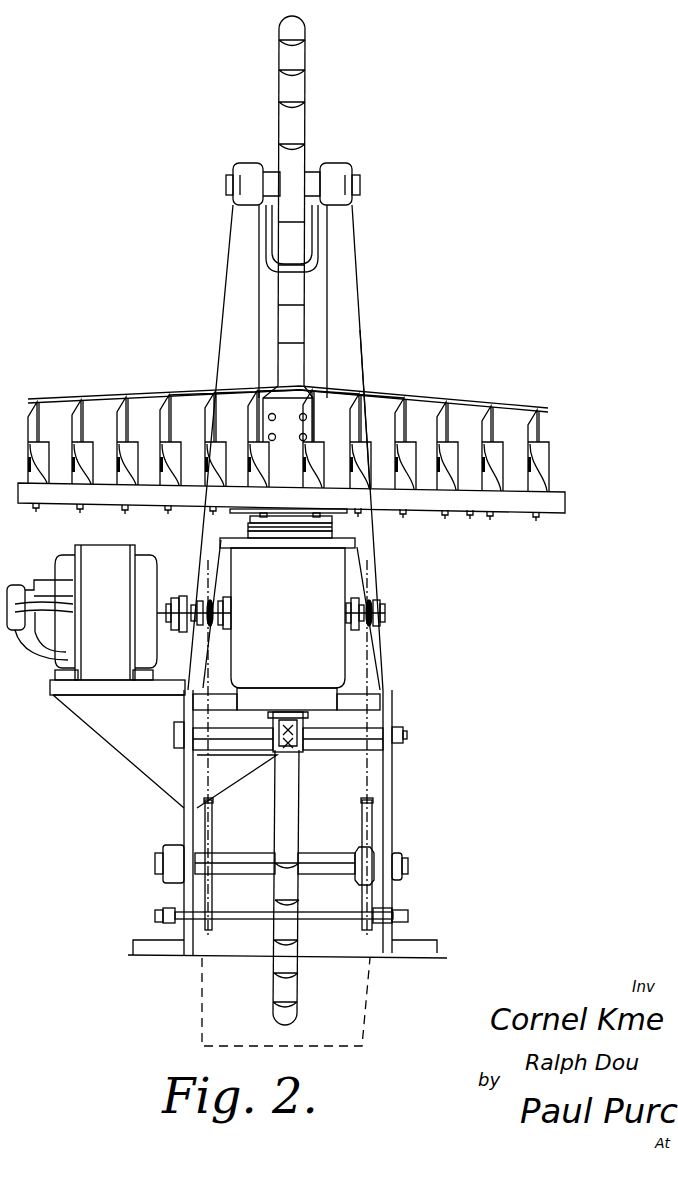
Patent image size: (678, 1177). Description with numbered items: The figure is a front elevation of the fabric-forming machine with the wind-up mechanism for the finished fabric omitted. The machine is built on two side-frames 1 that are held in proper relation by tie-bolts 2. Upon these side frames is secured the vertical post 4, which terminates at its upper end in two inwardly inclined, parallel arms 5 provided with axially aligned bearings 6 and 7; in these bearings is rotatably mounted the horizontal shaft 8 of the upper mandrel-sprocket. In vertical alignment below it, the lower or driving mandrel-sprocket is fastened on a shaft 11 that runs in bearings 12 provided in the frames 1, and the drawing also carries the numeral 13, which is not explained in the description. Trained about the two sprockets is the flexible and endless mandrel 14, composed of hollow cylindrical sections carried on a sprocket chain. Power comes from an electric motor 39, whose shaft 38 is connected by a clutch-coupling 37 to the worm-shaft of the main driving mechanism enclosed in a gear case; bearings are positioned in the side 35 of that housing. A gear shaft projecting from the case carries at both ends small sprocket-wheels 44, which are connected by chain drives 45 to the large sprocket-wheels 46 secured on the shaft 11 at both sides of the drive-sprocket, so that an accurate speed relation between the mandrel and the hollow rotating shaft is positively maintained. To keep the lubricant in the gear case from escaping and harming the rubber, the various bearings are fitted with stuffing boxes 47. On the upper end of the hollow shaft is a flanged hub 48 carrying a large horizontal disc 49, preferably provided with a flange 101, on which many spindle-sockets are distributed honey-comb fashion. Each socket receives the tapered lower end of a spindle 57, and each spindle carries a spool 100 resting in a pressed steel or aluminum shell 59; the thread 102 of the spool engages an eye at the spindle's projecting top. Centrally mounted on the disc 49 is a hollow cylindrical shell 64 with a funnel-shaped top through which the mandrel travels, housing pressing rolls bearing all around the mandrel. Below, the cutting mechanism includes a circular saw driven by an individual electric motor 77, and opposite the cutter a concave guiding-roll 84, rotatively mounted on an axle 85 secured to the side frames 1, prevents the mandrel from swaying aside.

The side-frames 1 is at (393, 800).
The tie-bolts 2 is at (258, 920).
The vertical post 4 is at (376, 558).
The inwardly inclined parallel arms 5 is at (236, 250).
The bearing 6 is at (352, 170).
The bearing 7 is at (236, 165).
The horizontal shaft 8 is at (360, 180).
The shaft 11 is at (256, 855).
The bearings 12 is at (402, 860).
The bearing hub 13 is at (176, 870).
The flexible endless mandrel 14 is at (300, 90).
The side of gear case 35 is at (347, 656).
The clutch-coupling 37 is at (182, 598).
The motor shaft 38 is at (185, 622).
The electric motor 39 is at (90, 576).
The small sprocket-wheels 44 is at (204, 604).
The chain drives 45 is at (210, 765).
The large sprocket-wheels 46 is at (393, 807).
The stuffing boxes 47 is at (244, 515).
The flanged hub 48 is at (332, 518).
The horizontal disc 49 is at (470, 518).
The spindles 57 is at (40, 404).
The shell 59 is at (550, 440).
The hollow cylindrical shell 64 is at (340, 386).
The electric motor 77 is at (272, 714).
The concave guiding-roll 84 is at (302, 750).
The axle 85 is at (405, 736).
The spool 100 is at (120, 441).
The flange 101 is at (568, 492).
The thread 102 is at (112, 396).